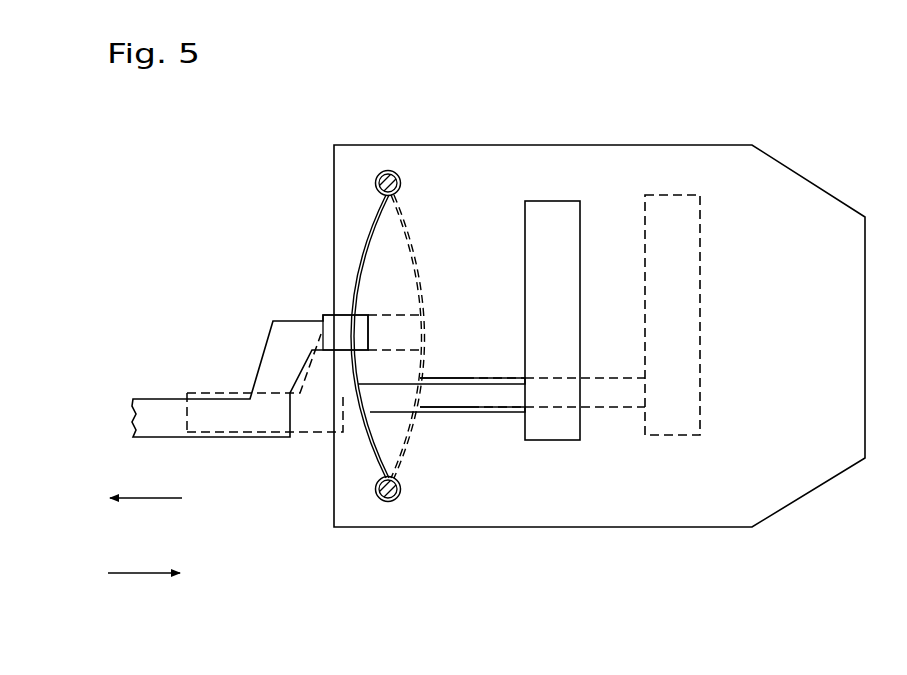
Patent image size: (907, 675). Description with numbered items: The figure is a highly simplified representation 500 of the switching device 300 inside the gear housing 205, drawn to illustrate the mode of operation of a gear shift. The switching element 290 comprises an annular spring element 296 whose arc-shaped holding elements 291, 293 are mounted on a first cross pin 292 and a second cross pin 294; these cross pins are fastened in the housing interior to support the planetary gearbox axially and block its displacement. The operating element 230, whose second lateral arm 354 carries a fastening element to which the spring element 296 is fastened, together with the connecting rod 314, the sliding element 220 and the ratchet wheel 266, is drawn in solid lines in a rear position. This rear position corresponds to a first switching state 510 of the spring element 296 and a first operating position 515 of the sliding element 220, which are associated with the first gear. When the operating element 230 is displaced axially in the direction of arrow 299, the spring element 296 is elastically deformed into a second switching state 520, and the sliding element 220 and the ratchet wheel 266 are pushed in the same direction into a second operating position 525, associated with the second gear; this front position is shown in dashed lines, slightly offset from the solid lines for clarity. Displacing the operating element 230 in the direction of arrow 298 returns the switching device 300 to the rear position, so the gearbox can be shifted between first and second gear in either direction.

The gear housing 205 is at (597, 136).
The sliding element 220 is at (560, 442).
The operating element 230 is at (157, 420).
The ratchet wheel 266 is at (552, 200).
The switching element 290 is at (350, 402).
The holding element 291 is at (396, 171).
The cross pin 292 is at (383, 172).
The holding element 293 is at (393, 502).
The cross pin 294 is at (384, 502).
The spring element 296 is at (358, 241).
The arrow 298 is at (137, 575).
The arrow 299 is at (157, 500).
The switching device 300 is at (179, 268).
The connecting rod 314 is at (470, 413).
The second lateral arm 354 is at (321, 330).
The simplified representation 500 is at (887, 107).
The first switching state 510 is at (342, 222).
The first operating position 515 is at (543, 455).
The second switching state 520 is at (434, 224).
The second operating position 525 is at (670, 455).